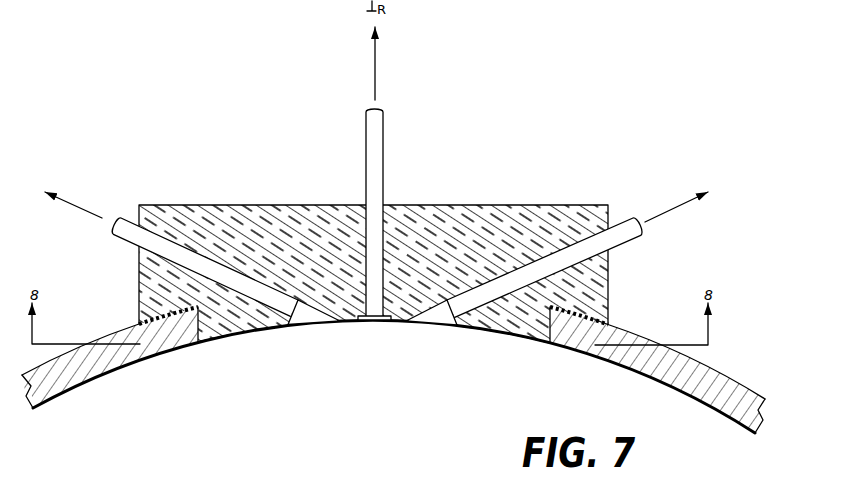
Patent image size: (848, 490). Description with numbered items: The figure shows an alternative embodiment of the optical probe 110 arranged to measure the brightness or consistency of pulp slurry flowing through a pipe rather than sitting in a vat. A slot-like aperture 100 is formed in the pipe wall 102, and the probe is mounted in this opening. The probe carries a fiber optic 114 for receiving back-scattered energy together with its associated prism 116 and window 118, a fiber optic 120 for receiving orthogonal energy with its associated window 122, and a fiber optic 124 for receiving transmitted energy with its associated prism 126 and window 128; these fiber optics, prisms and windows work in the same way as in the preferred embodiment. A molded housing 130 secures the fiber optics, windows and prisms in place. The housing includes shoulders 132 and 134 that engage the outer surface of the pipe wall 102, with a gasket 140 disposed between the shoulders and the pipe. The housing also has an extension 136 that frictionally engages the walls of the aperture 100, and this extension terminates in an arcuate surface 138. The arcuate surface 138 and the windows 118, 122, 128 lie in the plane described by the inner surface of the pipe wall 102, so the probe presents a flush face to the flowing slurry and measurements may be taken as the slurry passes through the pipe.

The slot-like aperture 100 is at (393, 370).
The pipe wall 102 is at (97, 370).
The optical probe 110 is at (379, 241).
The fiber optic 114 is at (163, 237).
The prism 116 is at (226, 272).
The window 118 is at (310, 328).
The fiber optic 120 is at (397, 242).
The window 122 is at (368, 325).
The fiber optic 124 is at (580, 243).
The prism 126 is at (524, 270).
The window 128 is at (420, 325).
The molded housing 130 is at (223, 218).
The shoulder 132 is at (585, 307).
The shoulder 134 is at (145, 298).
The extension 136 is at (250, 322).
The arcuate surface 138 is at (505, 328).
The gasket 140 is at (602, 318).